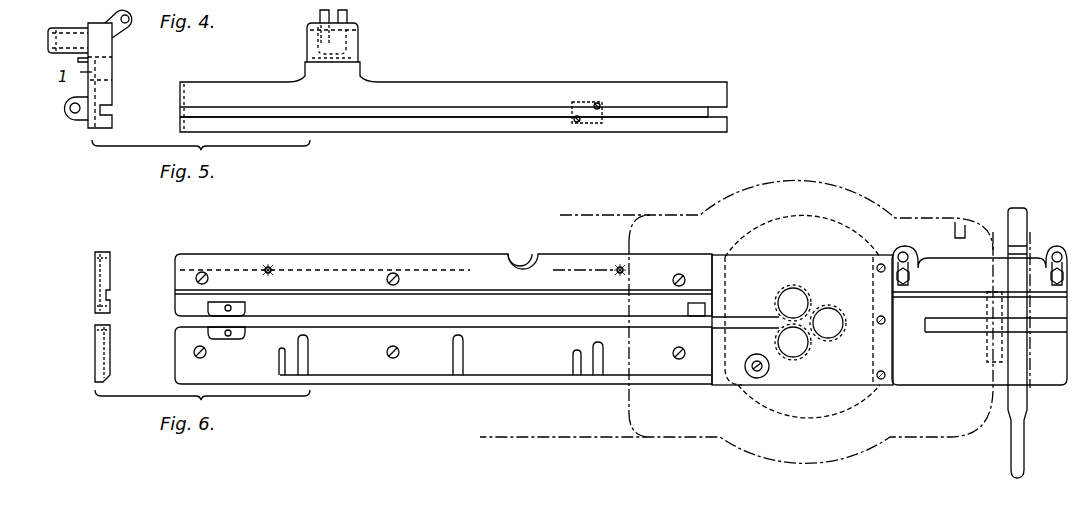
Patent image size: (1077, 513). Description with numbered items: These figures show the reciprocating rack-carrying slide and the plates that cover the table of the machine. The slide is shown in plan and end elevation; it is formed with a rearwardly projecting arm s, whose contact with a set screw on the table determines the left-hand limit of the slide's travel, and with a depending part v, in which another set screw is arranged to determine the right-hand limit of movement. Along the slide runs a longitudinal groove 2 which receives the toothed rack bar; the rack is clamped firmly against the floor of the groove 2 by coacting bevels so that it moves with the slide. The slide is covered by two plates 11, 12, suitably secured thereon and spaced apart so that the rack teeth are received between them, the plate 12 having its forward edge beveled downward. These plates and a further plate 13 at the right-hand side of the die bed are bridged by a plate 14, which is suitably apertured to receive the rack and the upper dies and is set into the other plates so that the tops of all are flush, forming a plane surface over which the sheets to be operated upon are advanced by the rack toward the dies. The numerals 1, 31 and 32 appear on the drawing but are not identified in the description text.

In FIG. 5, the support rod / standard 1 is at (492, 88).
In FIG. 5, the longitudinal groove 2 is at (497, 118).
In FIG. 5, the rearwardly projecting arm S is at (358, 66).
In FIG. 5, the contact posts 31 is at (345, 10).
In FIG. 5, the depending part v is at (585, 100).
In FIG. 6, the plate 11 is at (108, 273).
In FIG. 6, the plate 12 is at (105, 349).
In FIG. 6, the plate 13 is at (939, 385).
In FIG. 6, the plate 14 is at (817, 381).
In FIG. 6, the lever 32 is at (1027, 407).